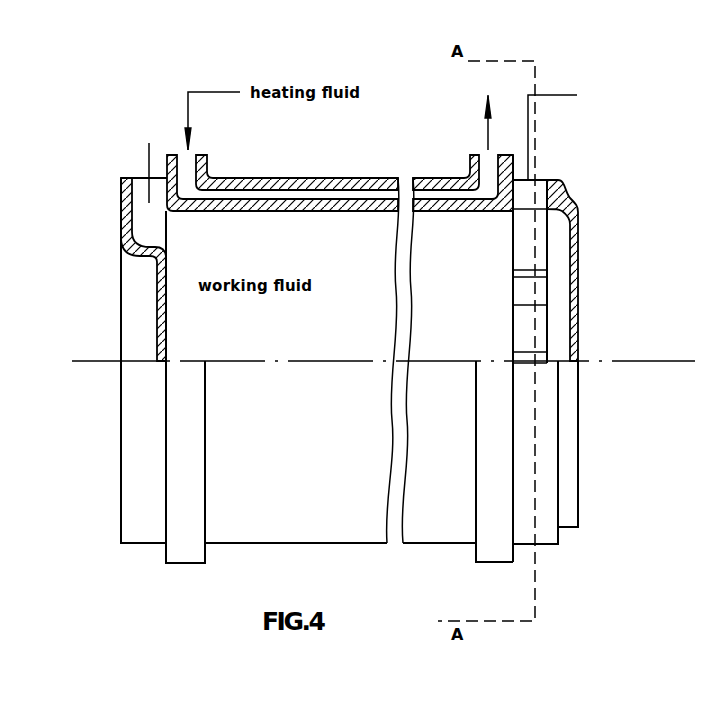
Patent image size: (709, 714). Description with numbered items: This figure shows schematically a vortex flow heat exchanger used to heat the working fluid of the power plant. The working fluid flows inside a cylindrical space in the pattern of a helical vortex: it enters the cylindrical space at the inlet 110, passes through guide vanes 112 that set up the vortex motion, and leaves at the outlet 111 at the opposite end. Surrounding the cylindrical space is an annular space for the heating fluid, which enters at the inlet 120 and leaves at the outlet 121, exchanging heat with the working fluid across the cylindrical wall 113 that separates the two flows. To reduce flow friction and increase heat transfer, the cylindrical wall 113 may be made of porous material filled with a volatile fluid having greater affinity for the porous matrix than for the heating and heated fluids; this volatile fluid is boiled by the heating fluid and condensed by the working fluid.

The inlet 110 is at (549, 180).
The outlet 111 is at (125, 178).
The guide vanes 112 is at (513, 232).
The cylindrical wall 113 is at (378, 215).
The inlet 120 is at (191, 156).
The outlet 121 is at (468, 157).